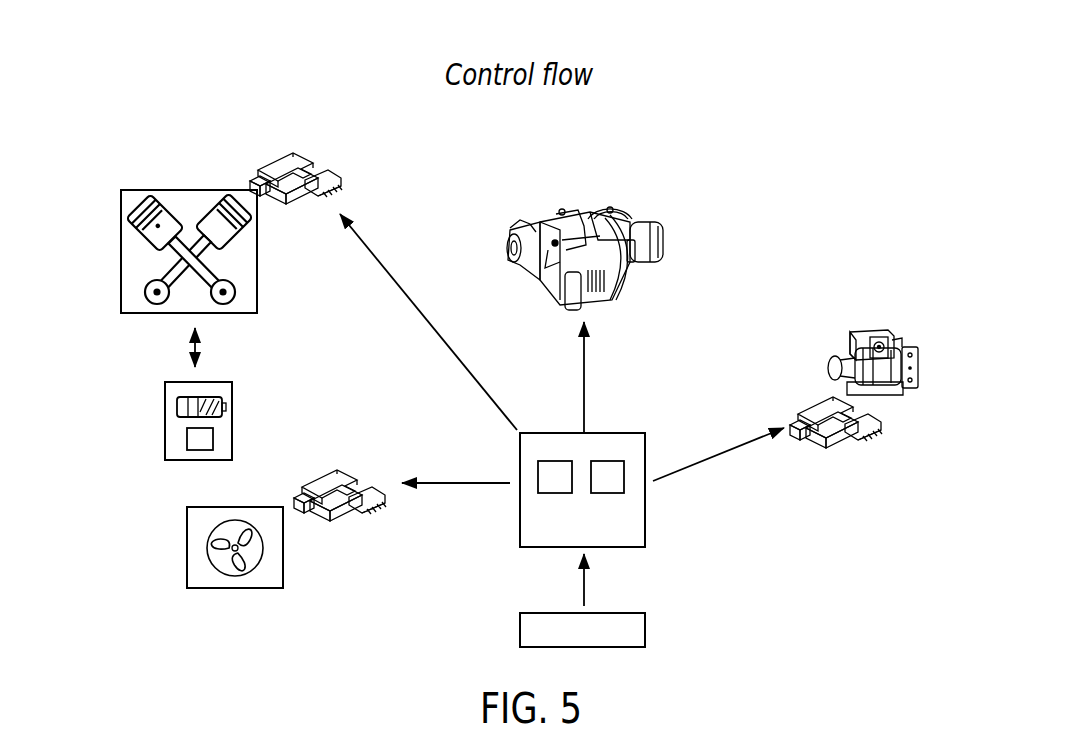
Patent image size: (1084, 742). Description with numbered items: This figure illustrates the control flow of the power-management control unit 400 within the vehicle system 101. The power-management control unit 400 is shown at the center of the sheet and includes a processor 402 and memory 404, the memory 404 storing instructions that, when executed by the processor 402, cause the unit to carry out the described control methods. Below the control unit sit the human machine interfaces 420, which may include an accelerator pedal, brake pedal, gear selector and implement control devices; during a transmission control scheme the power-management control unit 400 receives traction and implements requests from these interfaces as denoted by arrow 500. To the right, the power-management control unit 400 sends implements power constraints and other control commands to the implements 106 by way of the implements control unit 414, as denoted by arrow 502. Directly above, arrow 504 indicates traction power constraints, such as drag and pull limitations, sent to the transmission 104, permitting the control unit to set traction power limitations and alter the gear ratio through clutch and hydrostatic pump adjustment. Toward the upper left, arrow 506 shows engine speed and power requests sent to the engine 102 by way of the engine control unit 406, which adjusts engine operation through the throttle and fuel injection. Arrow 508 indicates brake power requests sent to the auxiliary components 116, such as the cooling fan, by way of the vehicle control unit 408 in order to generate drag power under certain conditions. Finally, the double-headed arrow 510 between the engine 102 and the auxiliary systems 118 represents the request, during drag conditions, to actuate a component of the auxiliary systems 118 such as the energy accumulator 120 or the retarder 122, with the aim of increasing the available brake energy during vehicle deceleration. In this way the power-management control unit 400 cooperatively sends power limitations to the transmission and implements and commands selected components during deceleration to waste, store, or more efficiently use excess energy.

The vehicle system 101 is at (798, 194).
The engine 102 is at (127, 191).
The transmission 104 is at (697, 208).
The implements 106 is at (831, 330).
The auxiliary components 116 is at (283, 573).
The auxiliary systems 118 is at (232, 418).
The energy accumulator 120 is at (191, 396).
The retarder 122 is at (213, 437).
The power-management control unit 400 is at (597, 433).
The processor 402 is at (555, 493).
The memory 404 is at (608, 493).
The engine control unit 406 is at (317, 147).
The vehicle control unit 408 is at (354, 460).
The implements control unit 414 is at (787, 391).
The human machine interfaces 420 is at (614, 613).
The arrow 500 is at (583, 589).
The arrow 502 is at (716, 459).
The arrow 504 is at (584, 373).
The arrow 506 is at (417, 304).
The arrow 508 is at (484, 483).
The arrow 510 is at (200, 348).